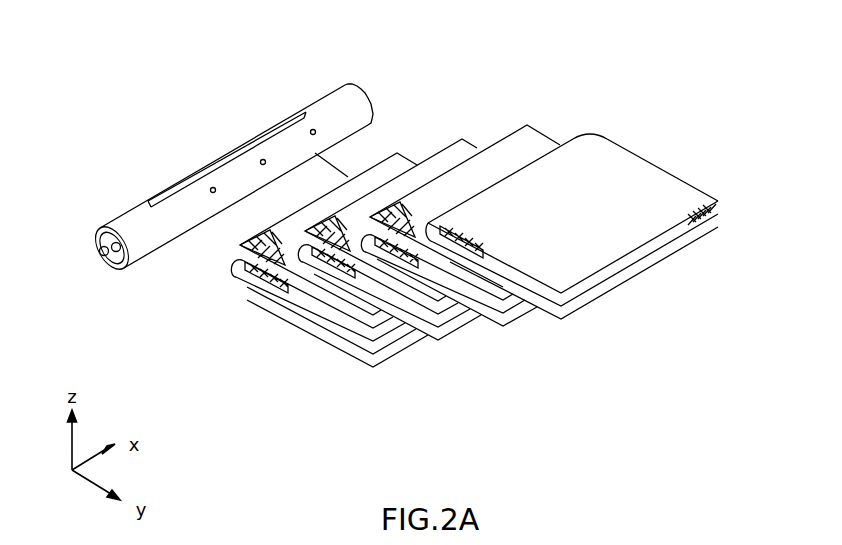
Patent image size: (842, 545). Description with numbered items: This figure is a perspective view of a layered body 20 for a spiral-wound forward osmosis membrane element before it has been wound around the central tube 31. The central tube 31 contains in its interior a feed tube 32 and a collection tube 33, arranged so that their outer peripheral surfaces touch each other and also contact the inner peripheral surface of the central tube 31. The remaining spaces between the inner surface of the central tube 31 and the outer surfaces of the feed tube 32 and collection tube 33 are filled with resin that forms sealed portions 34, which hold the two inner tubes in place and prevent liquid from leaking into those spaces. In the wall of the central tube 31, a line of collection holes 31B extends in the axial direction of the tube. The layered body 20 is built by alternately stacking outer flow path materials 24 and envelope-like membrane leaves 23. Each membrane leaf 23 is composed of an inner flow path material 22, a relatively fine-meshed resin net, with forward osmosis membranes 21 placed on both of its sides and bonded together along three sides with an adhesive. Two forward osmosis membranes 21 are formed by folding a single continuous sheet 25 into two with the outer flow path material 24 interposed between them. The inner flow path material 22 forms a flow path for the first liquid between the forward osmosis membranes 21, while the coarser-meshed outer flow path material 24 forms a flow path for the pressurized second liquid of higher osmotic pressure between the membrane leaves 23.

The layered body 20 is at (456, 372).
The forward osmosis membrane 21 is at (628, 176).
The inner flow path material 22 is at (203, 244).
The membrane leaf 23 is at (685, 365).
The outer flow path material 24 is at (656, 270).
The continuous sheet 25 is at (669, 165).
The central tube 31 is at (357, 105).
The collection hole 31B is at (212, 187).
The feed tube 32 is at (104, 245).
The collection tube 33 is at (118, 242).
The sealed portion 34 is at (114, 262).